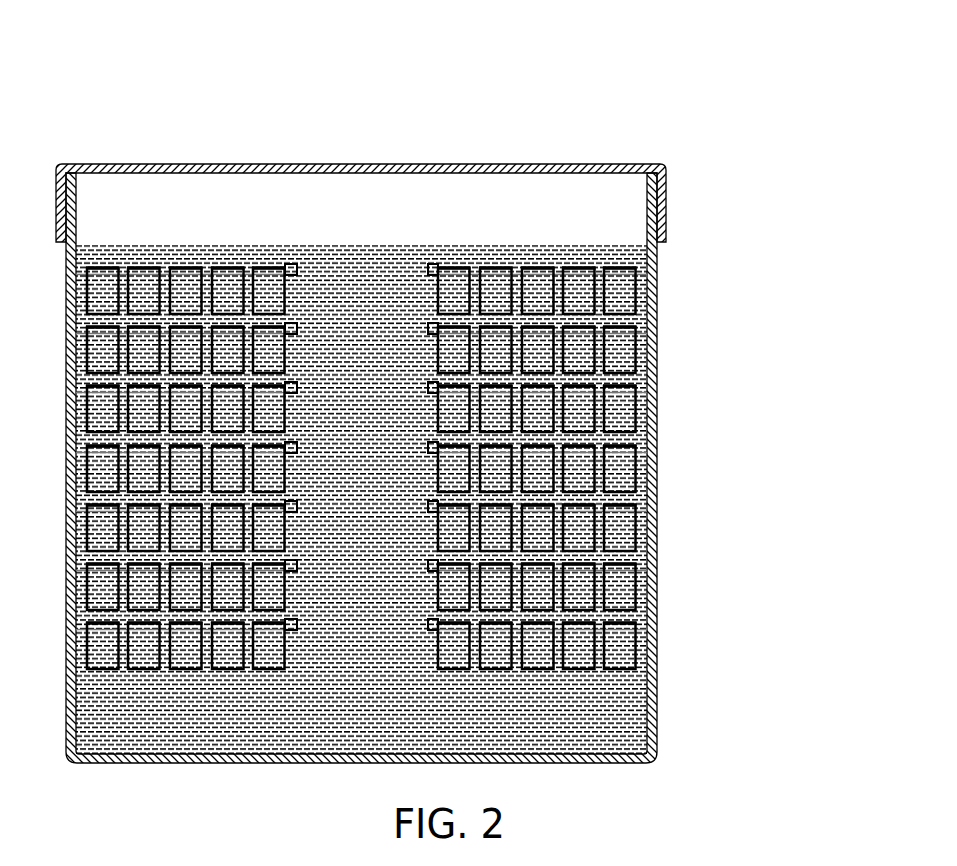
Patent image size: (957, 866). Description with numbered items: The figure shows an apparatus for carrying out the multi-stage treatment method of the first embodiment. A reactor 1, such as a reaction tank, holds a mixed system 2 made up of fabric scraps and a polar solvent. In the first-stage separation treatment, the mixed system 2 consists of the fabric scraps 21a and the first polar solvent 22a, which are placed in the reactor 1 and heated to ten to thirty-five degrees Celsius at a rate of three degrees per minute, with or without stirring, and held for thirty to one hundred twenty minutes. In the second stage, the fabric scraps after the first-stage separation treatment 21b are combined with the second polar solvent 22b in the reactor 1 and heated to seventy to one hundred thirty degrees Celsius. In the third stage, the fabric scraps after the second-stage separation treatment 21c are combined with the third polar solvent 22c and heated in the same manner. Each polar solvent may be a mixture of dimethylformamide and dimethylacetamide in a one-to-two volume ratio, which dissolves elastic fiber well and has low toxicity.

The reactor 1 is at (462, 389).
The mixed system 2 is at (472, 491).
The fabric scraps 21a is at (636, 284).
The fabric scraps after the first-stage separation treatment 21b is at (432, 414).
The fabric scraps after the second-stage separation treatment 21c is at (454, 473).
The first polar solvent 22a is at (636, 702).
The second polar solvent 22b is at (432, 564).
The third polar solvent 22c is at (454, 669).